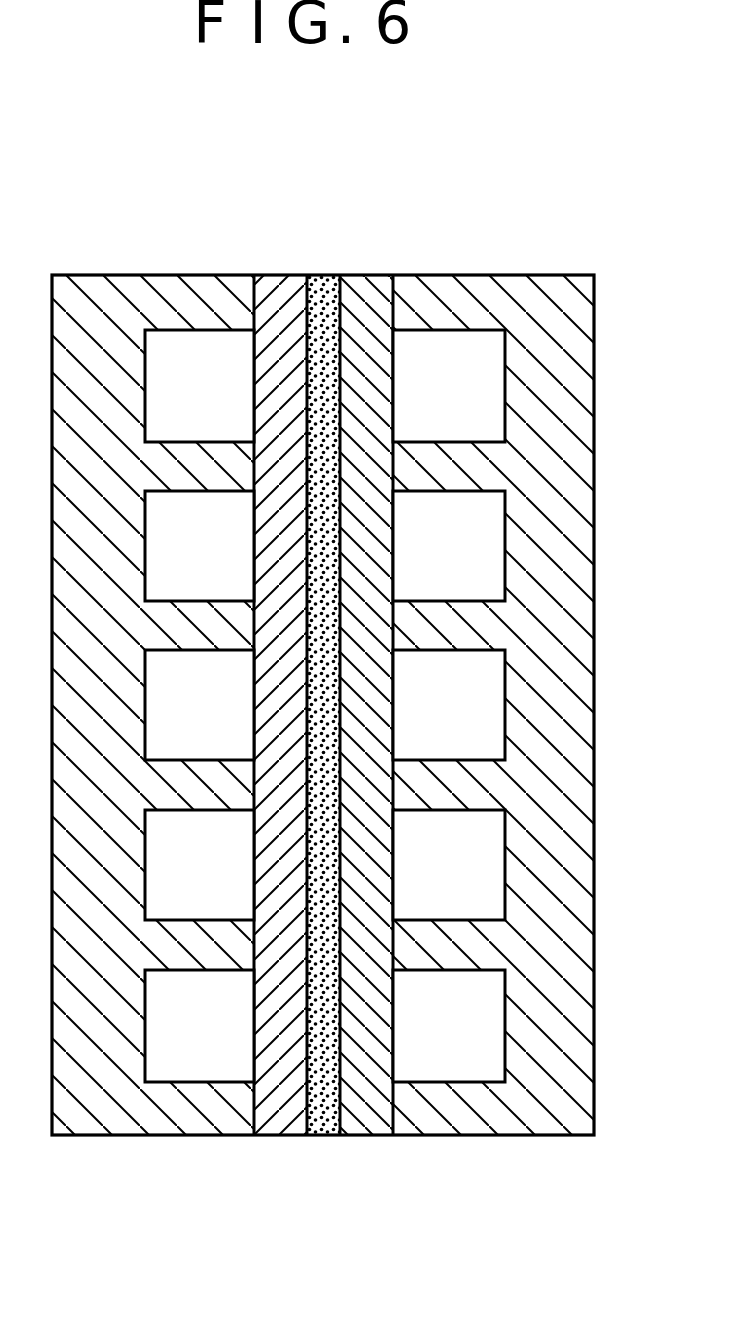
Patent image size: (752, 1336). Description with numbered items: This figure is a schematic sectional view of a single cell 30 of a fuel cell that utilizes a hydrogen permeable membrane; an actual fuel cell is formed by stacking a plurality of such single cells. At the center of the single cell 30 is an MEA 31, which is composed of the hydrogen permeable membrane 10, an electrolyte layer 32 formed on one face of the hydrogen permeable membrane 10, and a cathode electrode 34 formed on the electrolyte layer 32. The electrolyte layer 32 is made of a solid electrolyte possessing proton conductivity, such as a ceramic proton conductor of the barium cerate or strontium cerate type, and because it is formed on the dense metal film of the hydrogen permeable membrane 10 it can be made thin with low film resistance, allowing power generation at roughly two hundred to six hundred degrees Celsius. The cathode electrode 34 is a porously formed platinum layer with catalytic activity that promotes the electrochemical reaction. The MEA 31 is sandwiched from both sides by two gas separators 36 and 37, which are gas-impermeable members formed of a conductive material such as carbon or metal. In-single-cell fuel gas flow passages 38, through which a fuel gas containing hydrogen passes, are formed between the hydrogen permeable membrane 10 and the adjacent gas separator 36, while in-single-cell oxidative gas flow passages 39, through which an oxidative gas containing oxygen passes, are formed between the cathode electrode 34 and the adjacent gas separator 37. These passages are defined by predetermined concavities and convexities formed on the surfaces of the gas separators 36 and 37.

The single cell 30 is at (556, 203).
The MEA (Membrane Electrode Assembly) 31 is at (253, 202).
The cathode electrode 34 is at (272, 275).
The electrolyte layer 32 is at (320, 275).
The hydrogen permeable membrane 10 is at (375, 275).
The gas separator 37 is at (144, 275).
The gas separator 36 is at (494, 275).
The in-single-cell oxidative gas flow passage 39 is at (167, 897).
The in-single-cell fuel gas flow passage 38 is at (485, 897).